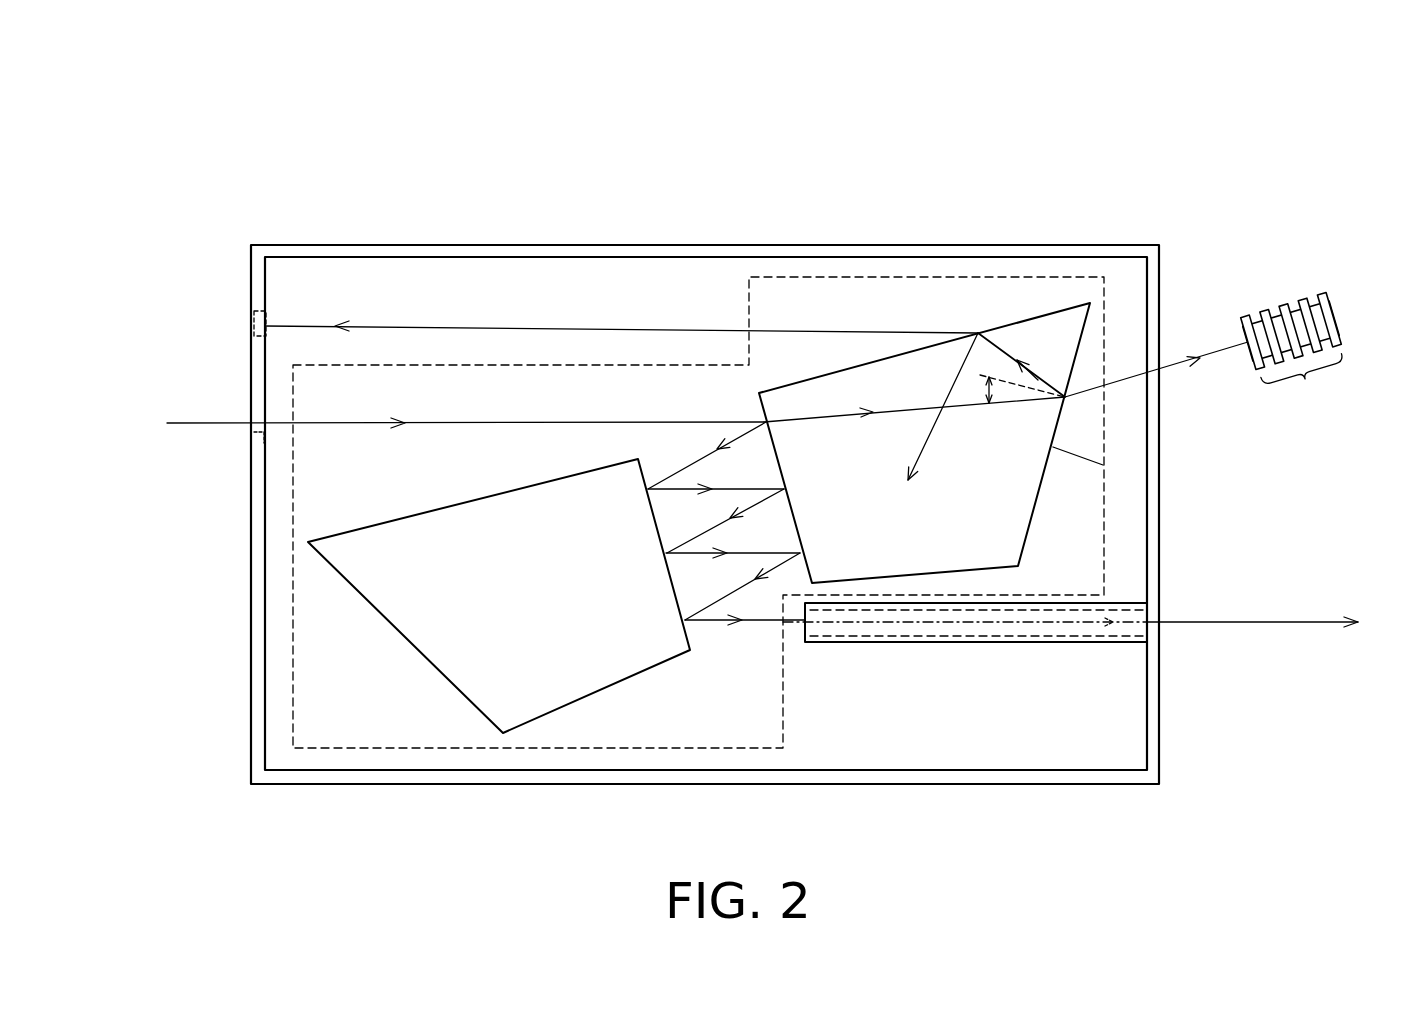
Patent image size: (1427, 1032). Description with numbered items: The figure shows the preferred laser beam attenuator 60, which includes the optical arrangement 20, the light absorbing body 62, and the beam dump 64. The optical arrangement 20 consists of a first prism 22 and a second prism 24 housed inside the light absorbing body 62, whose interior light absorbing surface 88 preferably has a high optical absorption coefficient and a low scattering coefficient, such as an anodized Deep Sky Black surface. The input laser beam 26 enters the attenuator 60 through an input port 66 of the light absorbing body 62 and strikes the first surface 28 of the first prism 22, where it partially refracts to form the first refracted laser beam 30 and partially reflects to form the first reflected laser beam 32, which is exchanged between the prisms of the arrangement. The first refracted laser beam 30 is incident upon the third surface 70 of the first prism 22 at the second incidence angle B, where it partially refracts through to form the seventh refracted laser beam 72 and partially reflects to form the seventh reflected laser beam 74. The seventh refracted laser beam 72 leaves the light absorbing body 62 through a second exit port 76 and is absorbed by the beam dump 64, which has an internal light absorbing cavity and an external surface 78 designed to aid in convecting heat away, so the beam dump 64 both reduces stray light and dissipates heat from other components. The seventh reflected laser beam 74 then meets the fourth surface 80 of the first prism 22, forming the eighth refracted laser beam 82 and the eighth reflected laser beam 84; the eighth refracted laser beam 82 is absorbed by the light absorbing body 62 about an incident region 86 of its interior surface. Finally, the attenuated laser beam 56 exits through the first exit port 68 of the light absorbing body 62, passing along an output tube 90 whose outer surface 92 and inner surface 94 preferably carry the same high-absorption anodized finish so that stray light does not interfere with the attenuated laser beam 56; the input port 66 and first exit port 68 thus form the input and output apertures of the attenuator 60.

The laser beam attenuator 60 is at (220, 118).
The light absorbing body 62 is at (767, 243).
The interior light absorbing surface 88 is at (267, 292).
The optical arrangement 20 is at (693, 640).
The second prism 24 is at (545, 586).
The first prism 22 is at (860, 518).
The seventh reflected laser beam 74 is at (1005, 352).
The fourth surface 80 is at (1052, 313).
The third surface 70 is at (1022, 553).
The first surface 28 is at (758, 403).
The eighth reflected laser beam 84 is at (928, 443).
The second incidence angle B is at (1022, 412).
The eighth refracted laser beam 82 is at (565, 327).
The incident region 86 is at (248, 307).
The input laser beam 26 is at (215, 422).
The input port 66 is at (250, 442).
The first refracted laser beam 30 is at (837, 415).
The first reflected laser beam 32 is at (692, 463).
The seventh refracted laser beam 72 is at (1227, 353).
The second exit port 76 is at (1163, 342).
The beam dump 64 is at (1333, 320).
The external surface 78 is at (1306, 383).
The output tube 90 is at (930, 643).
The outer surface 92 is at (1000, 643).
The inner surface 94 is at (1082, 637).
The attenuated laser beam 56 is at (1257, 622).
The first exit port 68 is at (1160, 642).